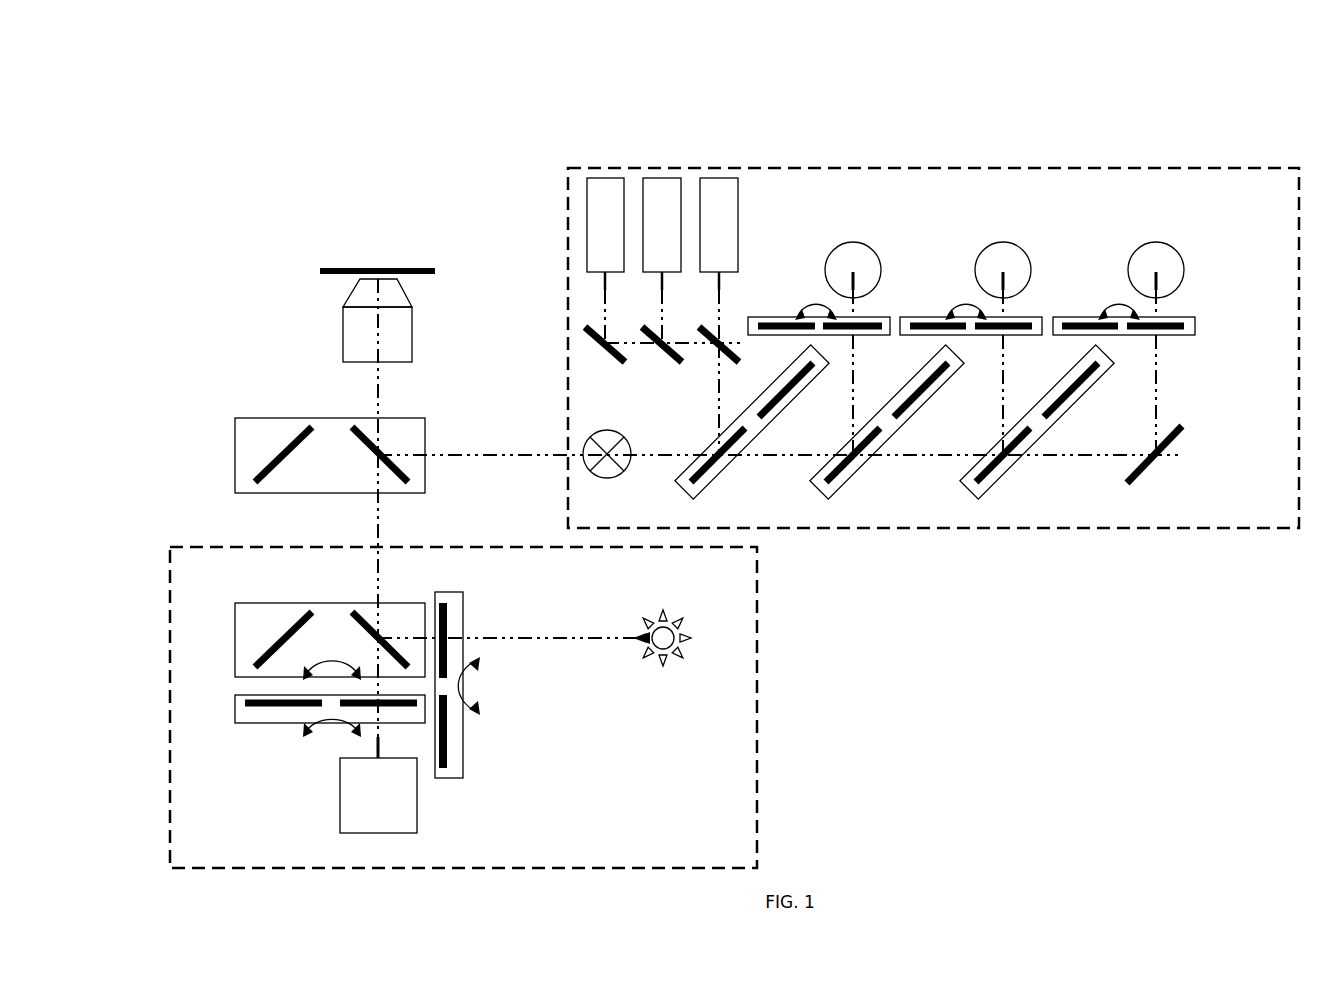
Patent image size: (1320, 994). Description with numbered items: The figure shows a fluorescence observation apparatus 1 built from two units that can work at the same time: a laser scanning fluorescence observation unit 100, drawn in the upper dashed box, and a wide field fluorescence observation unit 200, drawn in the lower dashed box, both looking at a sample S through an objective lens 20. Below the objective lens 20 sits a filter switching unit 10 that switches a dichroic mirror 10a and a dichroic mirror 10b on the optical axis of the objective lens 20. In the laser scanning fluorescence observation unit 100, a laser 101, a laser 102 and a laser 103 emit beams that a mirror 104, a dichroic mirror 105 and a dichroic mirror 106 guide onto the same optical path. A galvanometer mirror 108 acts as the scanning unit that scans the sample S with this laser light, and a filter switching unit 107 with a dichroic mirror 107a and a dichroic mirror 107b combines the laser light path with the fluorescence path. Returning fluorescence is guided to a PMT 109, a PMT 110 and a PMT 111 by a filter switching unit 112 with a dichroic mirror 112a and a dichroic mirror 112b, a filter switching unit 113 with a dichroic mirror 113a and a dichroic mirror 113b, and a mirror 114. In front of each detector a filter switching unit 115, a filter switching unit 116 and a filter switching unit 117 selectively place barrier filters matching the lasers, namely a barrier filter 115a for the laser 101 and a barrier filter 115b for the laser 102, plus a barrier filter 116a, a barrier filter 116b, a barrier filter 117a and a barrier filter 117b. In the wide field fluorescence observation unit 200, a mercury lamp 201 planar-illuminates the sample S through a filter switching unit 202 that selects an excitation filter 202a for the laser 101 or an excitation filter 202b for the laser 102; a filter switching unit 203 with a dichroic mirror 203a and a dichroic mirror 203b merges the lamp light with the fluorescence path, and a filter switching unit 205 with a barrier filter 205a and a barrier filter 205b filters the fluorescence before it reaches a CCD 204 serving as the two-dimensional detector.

The fluorescence observation apparatus 1 is at (1284, 77).
The laser scanning fluorescence observation unit 100 is at (1190, 168).
The wide field fluorescence observation unit 200 is at (757, 680).
The sample S is at (398, 269).
The objective lens 20 is at (343, 340).
The filter switching unit 10 is at (235, 455).
The dichroic mirror 10a is at (293, 450).
The dichroic mirror 10b is at (364, 450).
The laser 101 is at (607, 178).
The laser 102 is at (664, 178).
The laser 103 is at (721, 178).
The mirror 104 is at (614, 365).
The dichroic mirror 105 is at (671, 365).
The dichroic mirror 106 is at (723, 365).
The filter switching unit 107 is at (736, 432).
The dichroic mirror 107a is at (712, 470).
The dichroic mirror 107b is at (790, 394).
The galvanometer mirror 108 is at (605, 478).
The PMT 109 is at (854, 242).
The PMT 110 is at (1004, 242).
The PMT 111 is at (1157, 242).
The filter switching unit 112 is at (865, 432).
The dichroic mirror 112a is at (847, 470).
The dichroic mirror 112b is at (925, 394).
The filter switching unit 113 is at (1018, 432).
The dichroic mirror 113a is at (997, 470).
The dichroic mirror 113b is at (1075, 394).
The mirror 114 is at (1150, 470).
The filter switching unit 115 is at (836, 308).
The barrier filter 115a is at (771, 322).
The barrier filter 115b is at (866, 322).
The filter switching unit 116 is at (987, 308).
The barrier filter 116a is at (923, 322).
The barrier filter 116b is at (1017, 322).
The filter switching unit 117 is at (1142, 308).
The barrier filter 117a is at (1075, 322).
The barrier filter 117b is at (1174, 322).
The mercury lamp 201 is at (670, 620).
The filter switching unit 202 is at (493, 677).
The excitation filter 202a is at (447, 630).
The excitation filter 202b is at (447, 760).
The filter switching unit 203 is at (235, 645).
The dichroic mirror 203a is at (287, 632).
The dichroic mirror 203b is at (372, 622).
The CCD 204 is at (340, 822).
The filter switching unit 205 is at (303, 730).
The barrier filter 205a is at (272, 712).
The barrier filter 205b is at (400, 712).